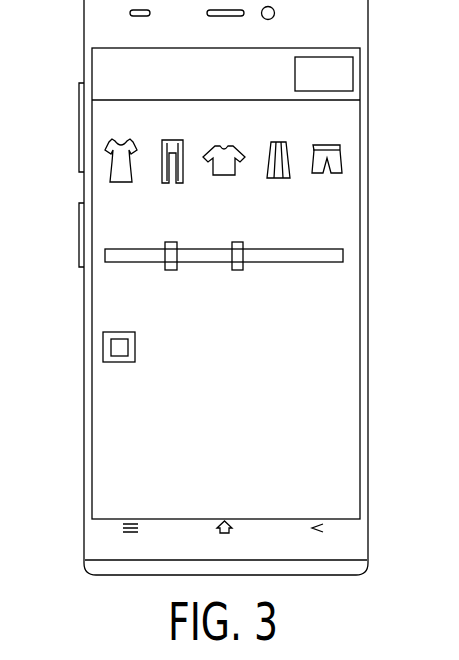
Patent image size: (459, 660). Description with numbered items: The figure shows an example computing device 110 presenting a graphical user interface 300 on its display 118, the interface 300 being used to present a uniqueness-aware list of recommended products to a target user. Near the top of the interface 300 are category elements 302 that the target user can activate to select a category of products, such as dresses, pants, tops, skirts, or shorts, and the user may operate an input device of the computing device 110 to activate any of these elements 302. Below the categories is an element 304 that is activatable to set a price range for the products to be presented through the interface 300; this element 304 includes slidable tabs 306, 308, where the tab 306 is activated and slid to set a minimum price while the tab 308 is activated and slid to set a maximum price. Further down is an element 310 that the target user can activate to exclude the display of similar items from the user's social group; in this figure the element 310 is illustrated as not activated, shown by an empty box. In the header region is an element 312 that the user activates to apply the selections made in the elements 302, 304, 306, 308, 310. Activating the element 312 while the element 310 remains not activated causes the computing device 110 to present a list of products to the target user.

The computing device 110 is at (103, 549).
The display 118 is at (105, 500).
The graphical user interface 300 is at (343, 130).
The elements 302 is at (72, 130).
The element 304 is at (112, 257).
The slidable tab 306 is at (170, 262).
The slidable tab 308 is at (236, 262).
The element 310 is at (118, 349).
The element 312 is at (350, 72).